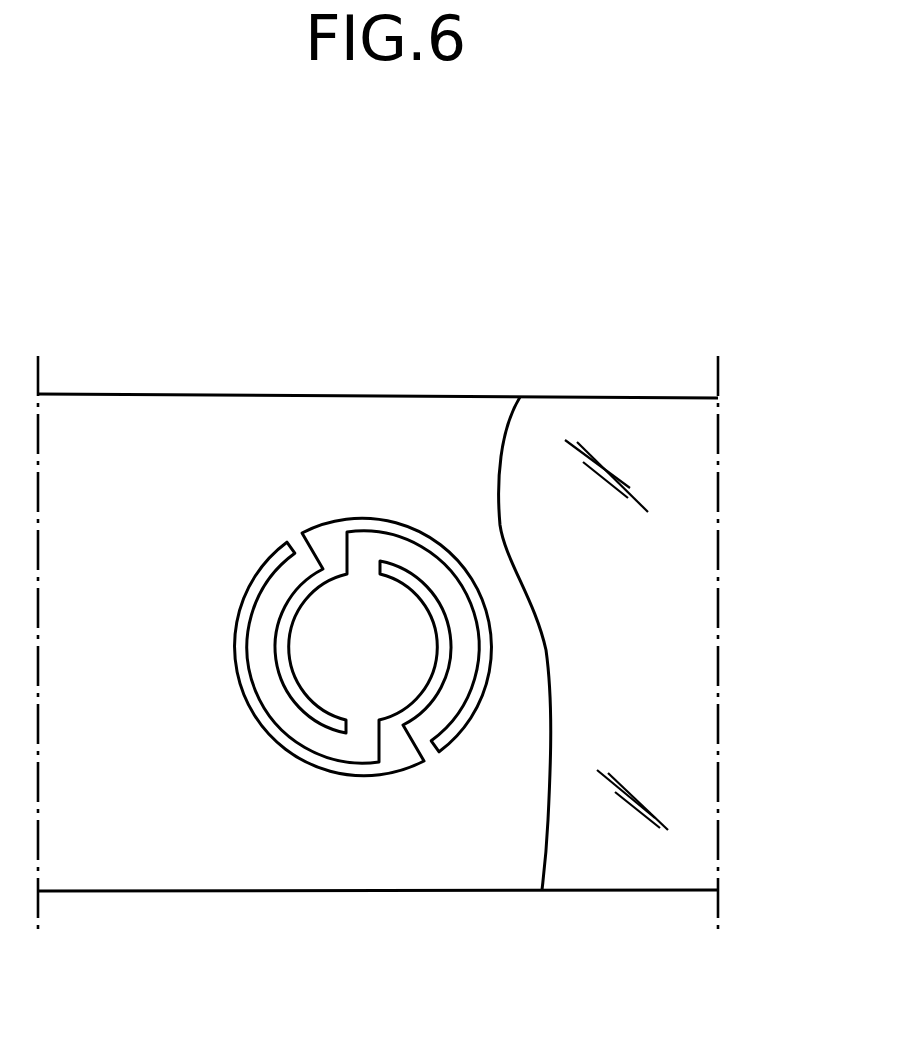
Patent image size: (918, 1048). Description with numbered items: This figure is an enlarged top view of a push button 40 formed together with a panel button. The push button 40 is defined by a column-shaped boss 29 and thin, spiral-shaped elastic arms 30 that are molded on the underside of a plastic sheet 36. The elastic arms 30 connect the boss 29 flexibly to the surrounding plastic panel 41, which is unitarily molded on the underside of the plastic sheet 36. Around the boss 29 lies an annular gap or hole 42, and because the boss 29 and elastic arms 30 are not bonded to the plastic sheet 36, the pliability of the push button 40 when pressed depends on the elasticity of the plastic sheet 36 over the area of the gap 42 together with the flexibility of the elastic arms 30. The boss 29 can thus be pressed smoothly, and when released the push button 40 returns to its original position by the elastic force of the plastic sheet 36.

The push button 40 is at (331, 500).
The plastic sheet 36 is at (542, 436).
The column-shaped boss 29 is at (407, 632).
The elastic arms 30 is at (455, 683).
The plastic panel 41 is at (210, 870).
The annular gap or hole 42 is at (400, 750).